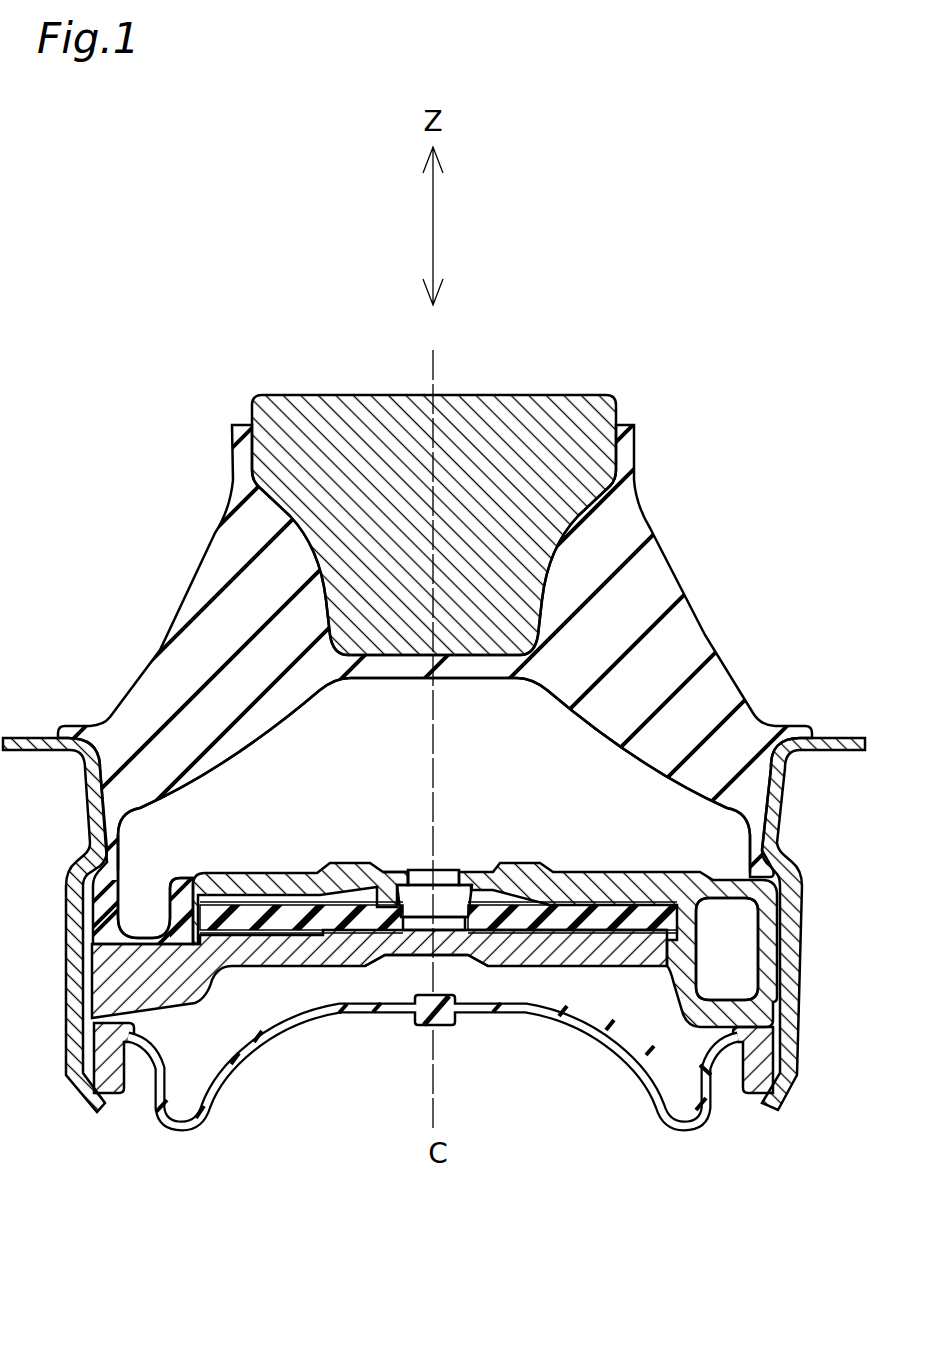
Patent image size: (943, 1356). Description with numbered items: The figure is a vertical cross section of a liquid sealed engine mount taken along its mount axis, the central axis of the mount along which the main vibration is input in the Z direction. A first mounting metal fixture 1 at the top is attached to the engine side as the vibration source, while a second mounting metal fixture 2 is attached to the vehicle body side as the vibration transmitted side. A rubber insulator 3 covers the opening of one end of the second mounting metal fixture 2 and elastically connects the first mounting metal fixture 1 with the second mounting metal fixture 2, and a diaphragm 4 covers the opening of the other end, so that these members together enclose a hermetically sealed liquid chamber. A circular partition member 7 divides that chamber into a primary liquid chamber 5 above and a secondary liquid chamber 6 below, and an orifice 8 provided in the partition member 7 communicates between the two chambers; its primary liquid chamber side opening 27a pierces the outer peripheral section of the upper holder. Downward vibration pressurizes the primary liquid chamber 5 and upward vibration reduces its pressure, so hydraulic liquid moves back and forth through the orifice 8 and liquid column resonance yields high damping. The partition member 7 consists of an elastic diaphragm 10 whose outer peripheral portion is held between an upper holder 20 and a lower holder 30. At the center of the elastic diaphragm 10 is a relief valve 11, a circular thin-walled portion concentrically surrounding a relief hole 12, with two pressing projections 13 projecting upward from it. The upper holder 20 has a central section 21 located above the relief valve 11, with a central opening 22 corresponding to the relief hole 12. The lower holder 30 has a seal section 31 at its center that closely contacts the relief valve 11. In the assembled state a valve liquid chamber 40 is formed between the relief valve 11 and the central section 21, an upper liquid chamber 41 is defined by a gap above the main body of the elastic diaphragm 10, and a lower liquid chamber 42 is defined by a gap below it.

The first mounting metal fixture 1 is at (555, 395).
The second mounting metal fixture 2 is at (82, 868).
The rubber insulator 3 is at (200, 580).
The diaphragm 4 is at (291, 1022).
The primary liquid chamber 5 is at (370, 759).
The secondary liquid chamber 6 is at (603, 1003).
The partition member 7 is at (235, 793).
The orifice 8 is at (740, 933).
The elastic diaphragm 10 is at (263, 926).
The relief valve 11 is at (528, 915).
The relief hole 12 is at (420, 932).
The pressing projection 13 is at (490, 870).
The upper holder 20 is at (220, 874).
The central section 21 is at (403, 870).
The central opening 22 is at (447, 870).
The primary liquid chamber side opening 27a is at (147, 906).
The lower holder 30 is at (322, 875).
The seal section 31 is at (447, 905).
The valve liquid chamber 40 is at (411, 1022).
The upper liquid chamber 41 is at (605, 872).
The lower liquid chamber 42 is at (530, 945).